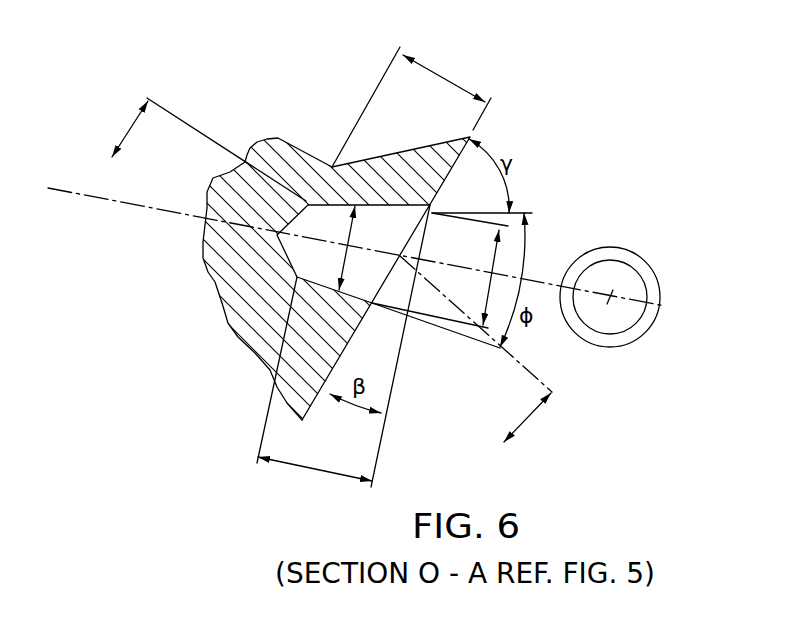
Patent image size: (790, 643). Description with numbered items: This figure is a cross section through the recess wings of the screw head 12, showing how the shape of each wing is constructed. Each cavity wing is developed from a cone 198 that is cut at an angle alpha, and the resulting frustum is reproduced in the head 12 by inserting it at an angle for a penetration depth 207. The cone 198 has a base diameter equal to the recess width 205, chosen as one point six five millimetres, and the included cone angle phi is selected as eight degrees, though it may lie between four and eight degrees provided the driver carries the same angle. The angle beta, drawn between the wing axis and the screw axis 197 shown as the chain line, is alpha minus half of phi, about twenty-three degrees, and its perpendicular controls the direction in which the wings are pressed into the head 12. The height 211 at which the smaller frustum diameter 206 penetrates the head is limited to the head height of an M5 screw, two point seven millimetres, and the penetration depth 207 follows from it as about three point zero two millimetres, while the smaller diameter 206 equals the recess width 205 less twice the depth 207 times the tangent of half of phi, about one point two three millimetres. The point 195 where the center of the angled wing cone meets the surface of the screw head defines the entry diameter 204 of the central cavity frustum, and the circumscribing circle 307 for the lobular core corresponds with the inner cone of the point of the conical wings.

The head 12 is at (408, 177).
The surface of the screw head 195 is at (398, 260).
The central axis 197 is at (130, 204).
The cone 198 is at (307, 261).
The entry diameter 204 is at (531, 417).
The recess width 205 is at (493, 252).
The smaller diameter of the frustum of the cone 206 is at (350, 243).
The penetration depth 207 is at (338, 467).
The height of cone frustum penetration into the head 211 is at (460, 69).
The circumscribing circle for the lobular core 307 is at (130, 126).